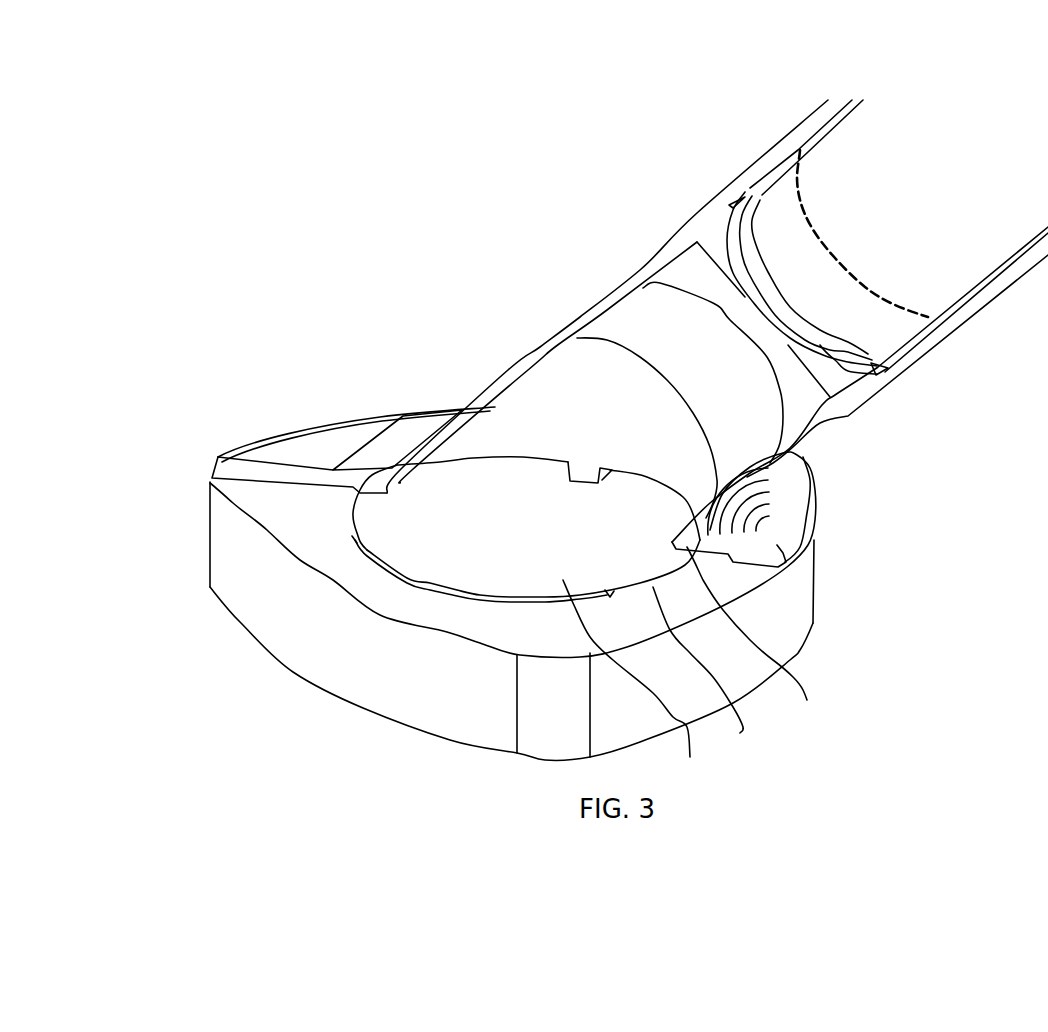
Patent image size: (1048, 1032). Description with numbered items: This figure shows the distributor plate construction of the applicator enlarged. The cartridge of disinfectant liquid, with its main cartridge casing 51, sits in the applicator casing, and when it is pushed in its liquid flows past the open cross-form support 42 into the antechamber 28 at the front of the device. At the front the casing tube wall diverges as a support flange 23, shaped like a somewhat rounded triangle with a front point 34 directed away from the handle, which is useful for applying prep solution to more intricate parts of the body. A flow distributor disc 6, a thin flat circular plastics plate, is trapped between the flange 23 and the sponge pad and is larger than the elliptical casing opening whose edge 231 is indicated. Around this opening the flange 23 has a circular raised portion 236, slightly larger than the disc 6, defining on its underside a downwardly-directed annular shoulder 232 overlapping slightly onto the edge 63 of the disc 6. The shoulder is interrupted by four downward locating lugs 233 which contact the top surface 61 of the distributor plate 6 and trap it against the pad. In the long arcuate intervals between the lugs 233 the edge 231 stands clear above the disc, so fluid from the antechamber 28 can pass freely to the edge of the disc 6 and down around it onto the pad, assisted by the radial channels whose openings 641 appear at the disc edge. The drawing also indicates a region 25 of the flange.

The flow distributor disc 6 is at (420, 600).
The front point 34 is at (210, 520).
The support flange 23 is at (425, 412).
The platform 25 is at (330, 443).
The circular raised portion 236 is at (407, 443).
The edge of casing opening 231 is at (515, 459).
The annular recess or shoulder 232 is at (640, 494).
The locating lugs 233 is at (582, 483).
The radial channels / edge openings 641 is at (605, 591).
The antechamber 28 is at (589, 431).
The open cross-form support 42 is at (835, 383).
The main cartridge casing 51 is at (947, 278).
The top surface of distributor plate 61 is at (633, 682).
The edge of disc 63 is at (704, 672).